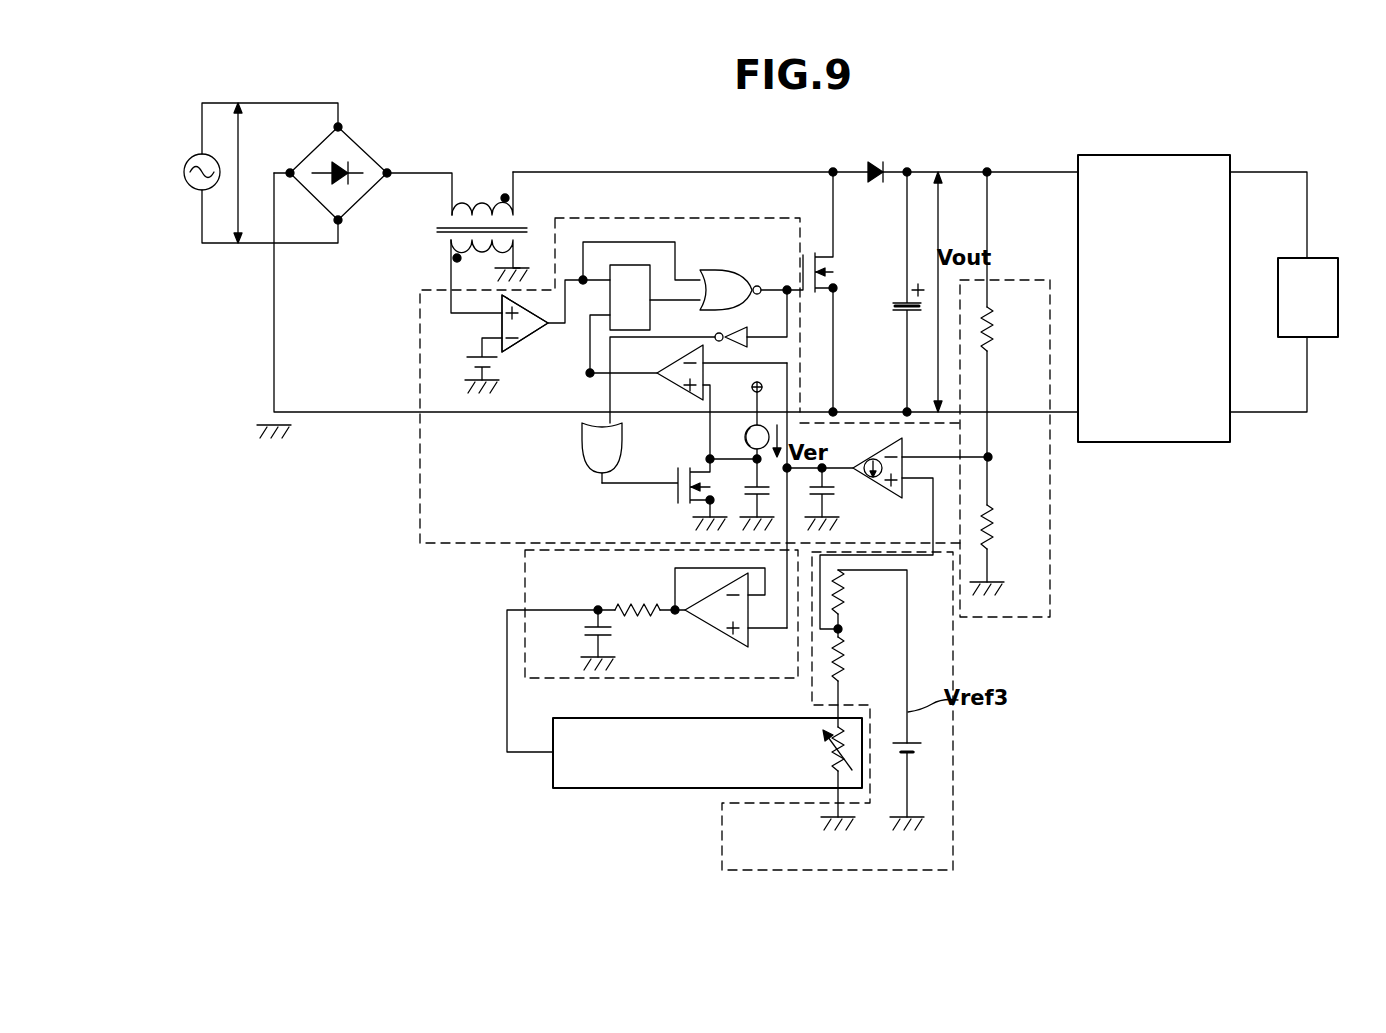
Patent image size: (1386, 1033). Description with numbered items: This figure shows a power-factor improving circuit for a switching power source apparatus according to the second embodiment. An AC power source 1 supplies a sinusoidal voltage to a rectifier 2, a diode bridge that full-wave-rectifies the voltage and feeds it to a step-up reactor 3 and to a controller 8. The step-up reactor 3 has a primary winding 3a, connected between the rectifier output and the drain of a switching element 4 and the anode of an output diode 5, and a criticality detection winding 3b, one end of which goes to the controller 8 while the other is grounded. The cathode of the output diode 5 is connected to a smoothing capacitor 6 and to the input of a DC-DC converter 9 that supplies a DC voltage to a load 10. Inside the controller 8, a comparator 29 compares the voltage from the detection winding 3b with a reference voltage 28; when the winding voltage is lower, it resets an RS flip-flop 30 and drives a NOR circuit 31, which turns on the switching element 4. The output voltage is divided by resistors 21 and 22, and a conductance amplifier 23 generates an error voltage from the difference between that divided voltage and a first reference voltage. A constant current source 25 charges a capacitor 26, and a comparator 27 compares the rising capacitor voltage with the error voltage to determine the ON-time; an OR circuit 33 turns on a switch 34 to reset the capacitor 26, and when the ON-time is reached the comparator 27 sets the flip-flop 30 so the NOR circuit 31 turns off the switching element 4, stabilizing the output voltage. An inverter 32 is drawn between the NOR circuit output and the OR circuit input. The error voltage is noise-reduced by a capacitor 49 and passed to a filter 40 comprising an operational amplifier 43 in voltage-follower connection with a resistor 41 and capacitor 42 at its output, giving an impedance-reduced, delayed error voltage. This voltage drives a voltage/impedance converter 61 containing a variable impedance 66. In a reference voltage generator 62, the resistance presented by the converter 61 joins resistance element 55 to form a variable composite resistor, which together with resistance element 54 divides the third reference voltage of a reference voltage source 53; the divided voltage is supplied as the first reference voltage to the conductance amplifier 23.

The AC power source 1 is at (190, 157).
The rectifier 2 is at (364, 150).
The step-up reactor 3 is at (496, 229).
The primary winding 3a is at (486, 198).
The criticality detection winding 3b is at (490, 276).
The switching element 4 is at (836, 260).
The output diode 5 is at (879, 160).
The smoothing capacitor 6 is at (900, 300).
The controller 8 is at (420, 487).
The DC-DC converter 9 is at (1155, 444).
The load 10 is at (1318, 258).
The resistor 21 is at (992, 320).
The resistor 22 is at (994, 518).
The conductance amplifier 23 is at (878, 452).
The constant current source 25 is at (744, 420).
The capacitor 26 is at (751, 493).
The comparator 27 is at (674, 379).
The reference voltage 28 is at (478, 354).
The comparator 29 is at (528, 337).
The RS flip-flop 30 is at (652, 318).
The NOR circuit 31 is at (721, 274).
The inverter 32 is at (744, 338).
The OR circuit 33 is at (580, 447).
The switch 34 is at (684, 472).
The filter 40 is at (522, 581).
The resistor 41 is at (643, 606).
The capacitor 42 is at (612, 631).
The operational amplifier 43 is at (713, 632).
The capacitor 49 is at (835, 490).
The reference voltage source 53 is at (901, 753).
The resistance element 54 is at (846, 600).
The resistance element 55 is at (846, 665).
The voltage/impedance converter 61 is at (576, 790).
The reference voltage generator 62 is at (955, 820).
The variable impedance 66 is at (835, 754).